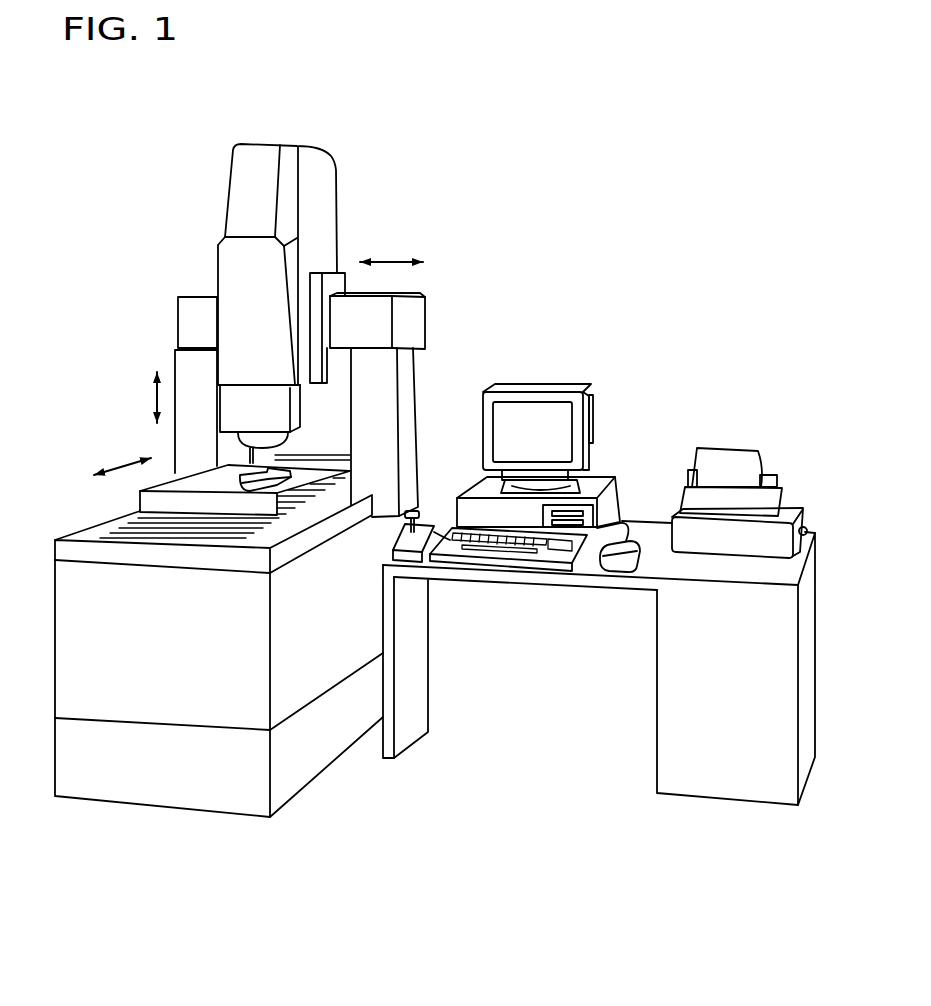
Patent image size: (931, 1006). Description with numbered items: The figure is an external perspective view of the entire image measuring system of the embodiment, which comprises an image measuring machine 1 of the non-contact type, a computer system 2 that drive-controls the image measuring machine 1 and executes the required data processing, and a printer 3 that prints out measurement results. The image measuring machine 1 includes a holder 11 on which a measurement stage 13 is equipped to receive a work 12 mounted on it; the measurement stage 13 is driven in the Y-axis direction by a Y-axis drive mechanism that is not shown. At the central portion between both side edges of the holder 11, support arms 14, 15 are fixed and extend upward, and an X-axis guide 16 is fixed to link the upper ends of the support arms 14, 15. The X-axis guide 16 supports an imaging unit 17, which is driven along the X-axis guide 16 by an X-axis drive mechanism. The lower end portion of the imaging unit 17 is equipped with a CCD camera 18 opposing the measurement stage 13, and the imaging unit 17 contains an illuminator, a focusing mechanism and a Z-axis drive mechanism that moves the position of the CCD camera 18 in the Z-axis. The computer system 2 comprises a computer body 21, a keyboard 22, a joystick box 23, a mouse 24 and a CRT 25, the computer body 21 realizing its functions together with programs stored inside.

The image measuring machine 1 is at (355, 172).
The computer system 2 is at (603, 373).
The printer 3 is at (752, 433).
The holder 11 is at (102, 522).
The work 12 is at (270, 479).
The measurement stage 13 is at (213, 475).
The support arm 14 is at (175, 365).
The support arm 15 is at (407, 397).
The X-axis guide 16 is at (198, 297).
The imaging unit 17 is at (227, 183).
The CCD camera 18 is at (277, 447).
The computer body 21 is at (597, 478).
The keyboard 22 is at (522, 556).
The joystick box 23 is at (405, 537).
The mouse 24 is at (607, 572).
The CRT 25 is at (587, 427).